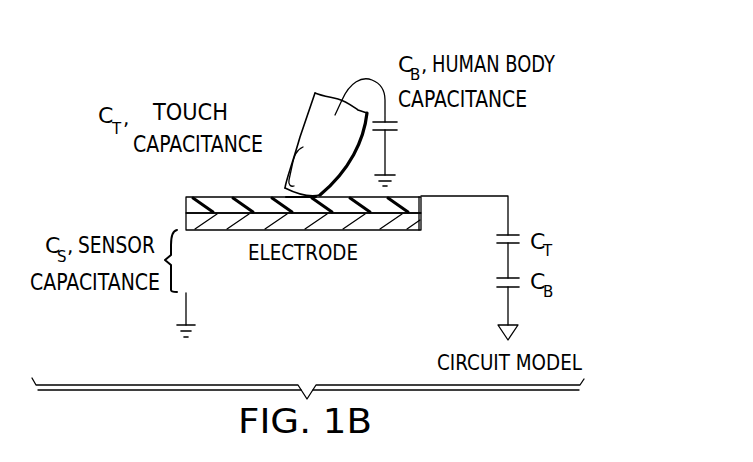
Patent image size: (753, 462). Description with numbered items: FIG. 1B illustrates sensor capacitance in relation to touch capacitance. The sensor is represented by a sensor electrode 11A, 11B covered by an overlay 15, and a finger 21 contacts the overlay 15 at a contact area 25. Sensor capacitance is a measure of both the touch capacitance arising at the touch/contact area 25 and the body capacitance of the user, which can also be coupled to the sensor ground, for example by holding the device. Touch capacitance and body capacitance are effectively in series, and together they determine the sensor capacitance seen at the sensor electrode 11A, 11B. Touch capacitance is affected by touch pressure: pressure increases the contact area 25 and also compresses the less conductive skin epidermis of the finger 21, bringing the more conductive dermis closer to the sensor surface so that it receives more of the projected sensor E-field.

The overlay 15 is at (413, 203).
The sensor electrode 11A is at (328, 249).
The sensor electrode 11B is at (413, 222).
The finger 21 is at (304, 107).
The contact area 25 is at (272, 188).